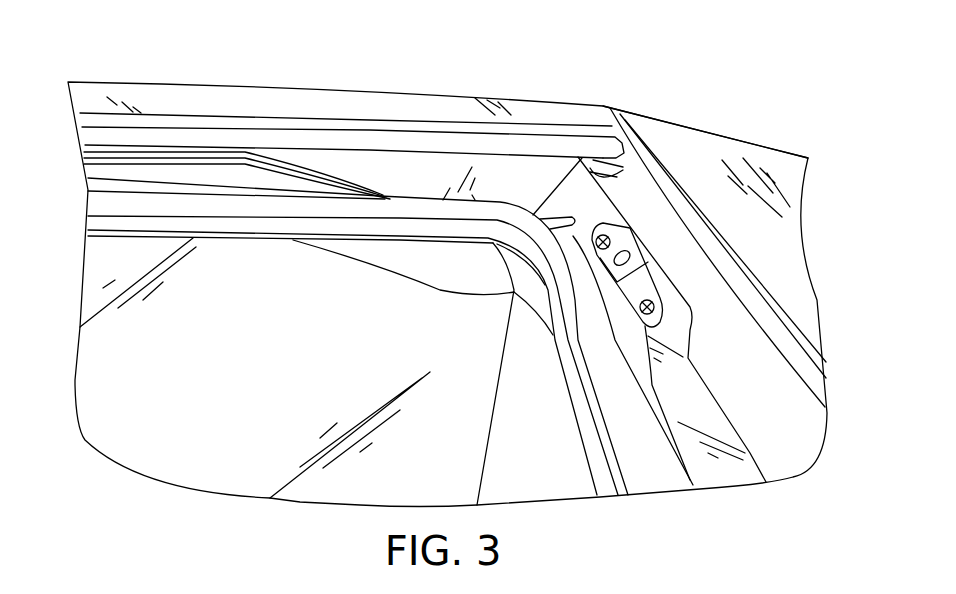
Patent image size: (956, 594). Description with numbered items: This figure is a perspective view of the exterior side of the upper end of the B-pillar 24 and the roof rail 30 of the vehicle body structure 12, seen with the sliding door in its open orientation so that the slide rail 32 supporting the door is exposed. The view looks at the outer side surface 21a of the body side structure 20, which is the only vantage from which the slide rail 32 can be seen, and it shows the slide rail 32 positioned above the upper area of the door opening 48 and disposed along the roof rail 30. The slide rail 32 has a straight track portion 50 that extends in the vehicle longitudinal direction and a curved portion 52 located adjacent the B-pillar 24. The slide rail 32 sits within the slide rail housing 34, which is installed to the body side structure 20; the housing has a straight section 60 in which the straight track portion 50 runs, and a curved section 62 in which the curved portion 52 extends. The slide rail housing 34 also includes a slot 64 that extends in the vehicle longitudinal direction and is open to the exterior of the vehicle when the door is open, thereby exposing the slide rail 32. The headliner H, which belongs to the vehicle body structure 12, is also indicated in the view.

The vehicle body structure 12 is at (95, 43).
The outer side surface 21a is at (155, 100).
The body side structure 20 is at (547, 103).
The roof rail 30 is at (423, 127).
The slot 64 is at (353, 163).
The slide rail 32 is at (237, 103).
The straight track portion 50 is at (250, 177).
The curved portion 52 is at (290, 167).
The slide rail housing 34 is at (358, 341).
The straight section 60 is at (232, 190).
The curved section 62 is at (192, 330).
The door opening 48 is at (607, 440).
The B-pillar 24 is at (752, 363).
The headliner H is at (187, 443).